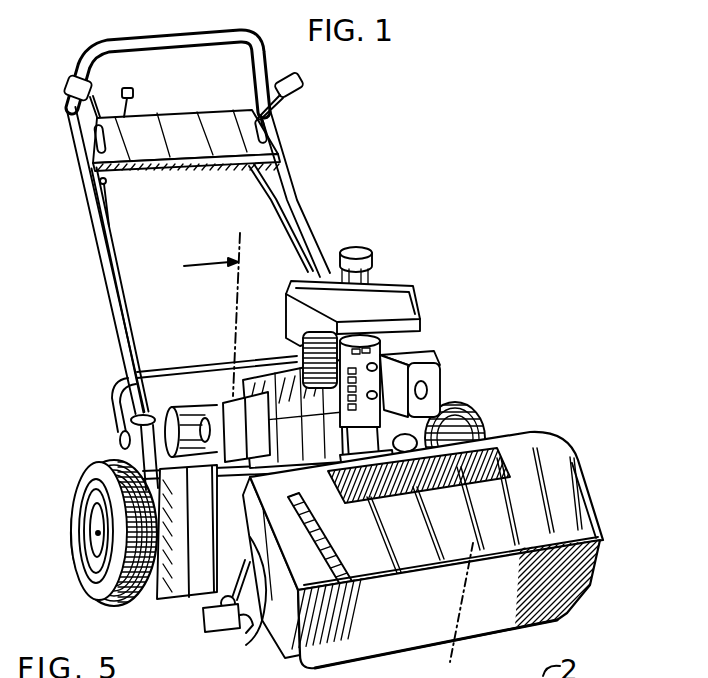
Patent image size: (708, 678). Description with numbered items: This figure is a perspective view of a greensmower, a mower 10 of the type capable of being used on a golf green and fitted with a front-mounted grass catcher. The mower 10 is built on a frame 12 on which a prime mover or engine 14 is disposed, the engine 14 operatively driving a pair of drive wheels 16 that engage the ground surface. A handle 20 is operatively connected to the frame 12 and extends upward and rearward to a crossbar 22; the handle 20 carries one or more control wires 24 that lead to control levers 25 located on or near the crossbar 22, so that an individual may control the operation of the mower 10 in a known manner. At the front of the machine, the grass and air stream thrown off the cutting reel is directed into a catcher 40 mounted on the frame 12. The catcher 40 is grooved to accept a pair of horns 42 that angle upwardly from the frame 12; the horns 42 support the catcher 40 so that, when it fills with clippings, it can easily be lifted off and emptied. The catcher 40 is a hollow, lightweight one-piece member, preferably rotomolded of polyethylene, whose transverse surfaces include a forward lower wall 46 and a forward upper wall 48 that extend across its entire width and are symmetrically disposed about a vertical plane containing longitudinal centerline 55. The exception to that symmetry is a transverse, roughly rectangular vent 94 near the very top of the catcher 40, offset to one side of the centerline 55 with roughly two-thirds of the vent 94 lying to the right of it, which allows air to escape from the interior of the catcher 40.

The mower 10 is at (500, 118).
The frame 12 is at (117, 446).
The engine 14 is at (425, 360).
The drive wheels 16 is at (452, 416).
The handle 20 is at (100, 244).
The crossbar 22 is at (205, 49).
The control wires 24 is at (104, 184).
The control levers 25 is at (68, 92).
The catcher 40 is at (470, 532).
The horns 42 is at (255, 632).
The forward lower wall 46 is at (410, 627).
The forward upper wall 48 is at (426, 511).
The longitudinal centerline 55 is at (443, 643).
The vent 94 is at (397, 483).